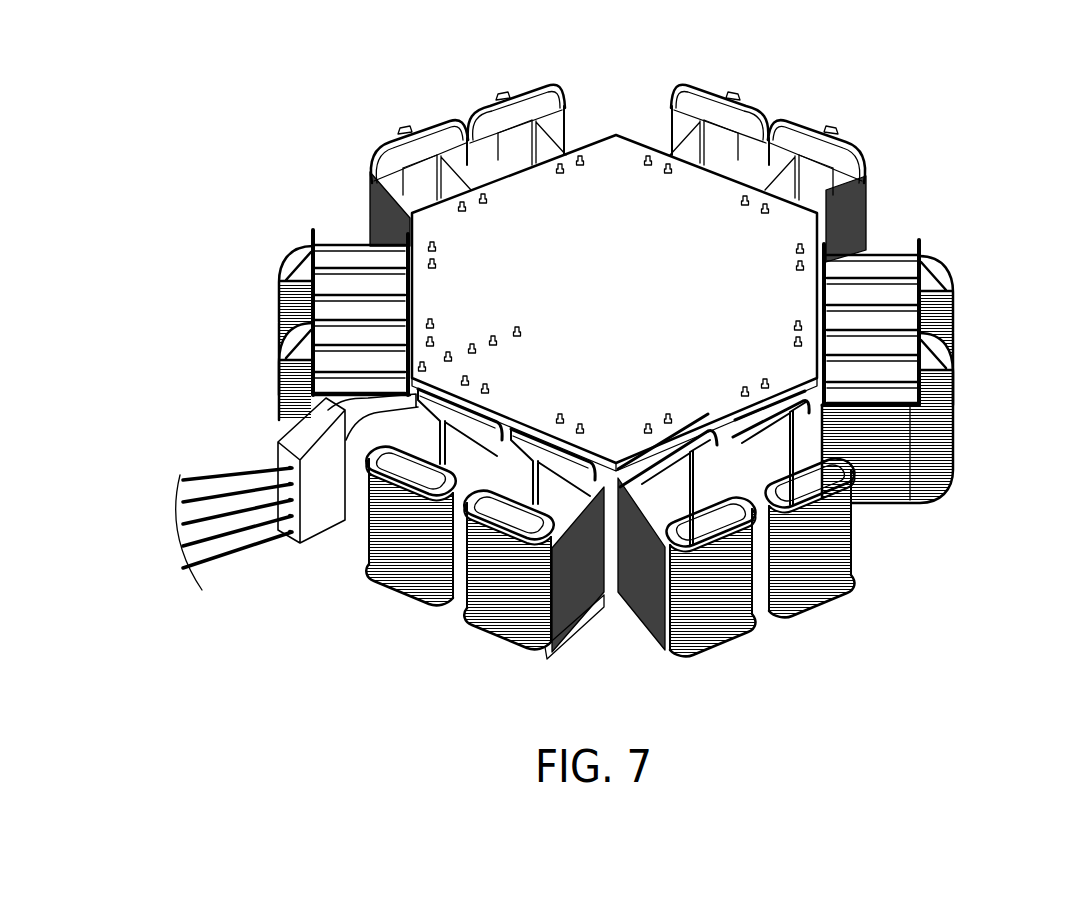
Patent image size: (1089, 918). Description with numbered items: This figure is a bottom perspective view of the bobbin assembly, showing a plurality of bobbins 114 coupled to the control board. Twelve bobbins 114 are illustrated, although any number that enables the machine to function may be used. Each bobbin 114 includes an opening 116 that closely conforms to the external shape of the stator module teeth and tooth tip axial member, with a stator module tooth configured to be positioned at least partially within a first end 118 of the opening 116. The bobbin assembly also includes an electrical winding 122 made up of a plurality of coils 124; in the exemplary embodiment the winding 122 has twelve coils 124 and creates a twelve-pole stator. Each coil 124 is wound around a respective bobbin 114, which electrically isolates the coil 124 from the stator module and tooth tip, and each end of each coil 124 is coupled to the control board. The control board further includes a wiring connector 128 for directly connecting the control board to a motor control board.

The bobbin 114 is at (382, 148).
The opening 116 is at (510, 125).
The first end 118 is at (683, 137).
The electrical winding 122 is at (948, 381).
The coil 124 is at (955, 430).
The wiring connector 128 is at (304, 545).